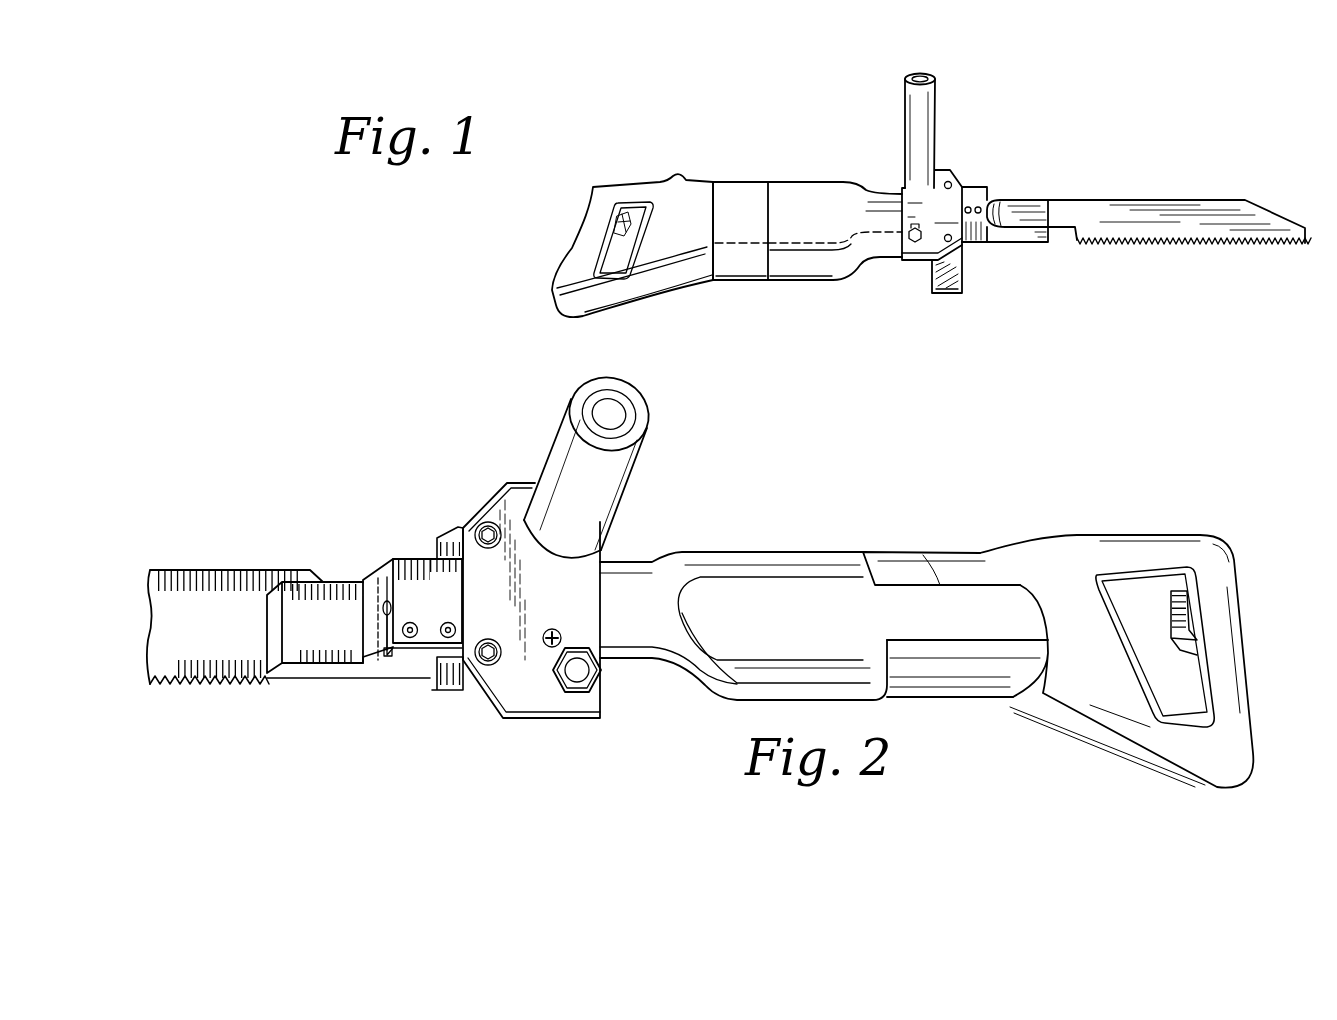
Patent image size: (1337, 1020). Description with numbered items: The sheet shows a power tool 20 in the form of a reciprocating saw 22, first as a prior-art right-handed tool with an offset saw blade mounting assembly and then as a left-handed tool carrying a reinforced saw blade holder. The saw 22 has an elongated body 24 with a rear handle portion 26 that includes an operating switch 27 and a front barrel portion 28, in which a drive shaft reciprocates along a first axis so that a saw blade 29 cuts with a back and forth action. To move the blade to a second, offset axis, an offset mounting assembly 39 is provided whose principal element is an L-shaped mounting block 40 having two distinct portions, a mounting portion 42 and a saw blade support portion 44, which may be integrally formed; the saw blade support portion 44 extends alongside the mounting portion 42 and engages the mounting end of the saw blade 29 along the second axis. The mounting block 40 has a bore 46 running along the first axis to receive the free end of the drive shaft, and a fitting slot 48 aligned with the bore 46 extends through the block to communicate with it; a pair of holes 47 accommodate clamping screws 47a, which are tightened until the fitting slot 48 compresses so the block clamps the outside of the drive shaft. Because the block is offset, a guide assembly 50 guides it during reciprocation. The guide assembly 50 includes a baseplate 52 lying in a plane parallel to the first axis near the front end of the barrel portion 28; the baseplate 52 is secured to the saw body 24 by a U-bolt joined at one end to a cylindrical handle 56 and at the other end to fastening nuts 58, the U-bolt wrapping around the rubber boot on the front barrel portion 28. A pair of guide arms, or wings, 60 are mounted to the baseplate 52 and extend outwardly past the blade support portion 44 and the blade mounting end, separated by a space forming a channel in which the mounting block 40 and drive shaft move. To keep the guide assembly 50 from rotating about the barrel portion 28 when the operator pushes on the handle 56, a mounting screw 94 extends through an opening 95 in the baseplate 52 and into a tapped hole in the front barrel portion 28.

In FIG. 1, the power tool 20 is at (806, 146).
In FIG. 1, the reciprocating saw 22 is at (807, 268).
In FIG. 1, the elongated body 24 is at (745, 186).
In FIG. 2, the elongated body 24 is at (898, 567).
In FIG. 1, the rear handle portion 26 is at (580, 246).
In FIG. 2, the rear handle portion 26 is at (1143, 540).
In FIG. 1, the operating switch 27 is at (614, 226).
In FIG. 2, the operating switch 27 is at (1163, 600).
In FIG. 1, the front barrel portion 28 is at (857, 190).
In FIG. 2, the front barrel portion 28 is at (628, 565).
In FIG. 1, the saw blade 29 is at (1168, 212).
In FIG. 2, the saw blade 29 is at (247, 578).
In FIG. 1, the blade clamp assembly 39 is at (985, 165).
In FIG. 2, the blade clamp assembly 39 is at (397, 694).
In FIG. 1, the mounting block 40 is at (1005, 208).
In FIG. 2, the mounting block 40 is at (321, 642).
In FIG. 1, the mounting portion 42 is at (970, 228).
In FIG. 2, the mounting portion 42 is at (416, 558).
In FIG. 1, the saw blade support portion 44 is at (1020, 236).
In FIG. 2, the saw blade support portion 44 is at (333, 594).
In FIG. 2, the bore 46 is at (384, 628).
In FIG. 2, the holes 47 is at (412, 640).
In FIG. 2, the clamping screws 47a is at (448, 640).
In FIG. 2, the fitting slot 48 is at (386, 645).
In FIG. 2, the guide assembly 50 is at (490, 478).
In FIG. 1, the baseplate 52 is at (916, 248).
In FIG. 2, the baseplate 52 is at (531, 600).
In FIG. 1, the cylindrical handle 56 is at (932, 112).
In FIG. 2, the cylindrical handle 56 is at (650, 421).
In FIG. 2, the fastening nuts 58 is at (580, 692).
In FIG. 1, the guide arms 60 is at (952, 294).
In FIG. 2, the guide arms 60 is at (444, 538).
In FIG. 2, the mounting screw 94 is at (552, 650).
In FIG. 2, the opening 95 is at (558, 636).